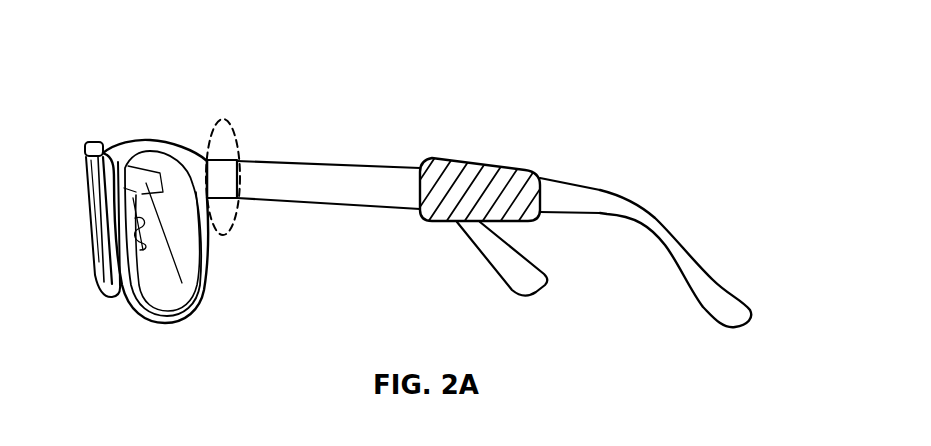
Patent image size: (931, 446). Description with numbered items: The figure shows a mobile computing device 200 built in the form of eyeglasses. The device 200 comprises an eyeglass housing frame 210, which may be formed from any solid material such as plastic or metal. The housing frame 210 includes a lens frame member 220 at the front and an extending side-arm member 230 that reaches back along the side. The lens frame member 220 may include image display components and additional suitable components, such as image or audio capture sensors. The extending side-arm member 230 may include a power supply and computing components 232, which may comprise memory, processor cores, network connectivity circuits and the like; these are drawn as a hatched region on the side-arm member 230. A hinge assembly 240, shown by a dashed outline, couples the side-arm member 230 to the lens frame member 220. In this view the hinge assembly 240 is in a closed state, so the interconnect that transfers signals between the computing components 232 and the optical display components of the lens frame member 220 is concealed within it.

The mobile computing device 200 is at (610, 122).
The eyeglass housing frame 210 is at (122, 157).
The lens frame member 220 is at (178, 327).
The extending side-arm member 230 is at (577, 208).
The computing components 232 is at (437, 157).
The hinge assembly 240 is at (228, 123).